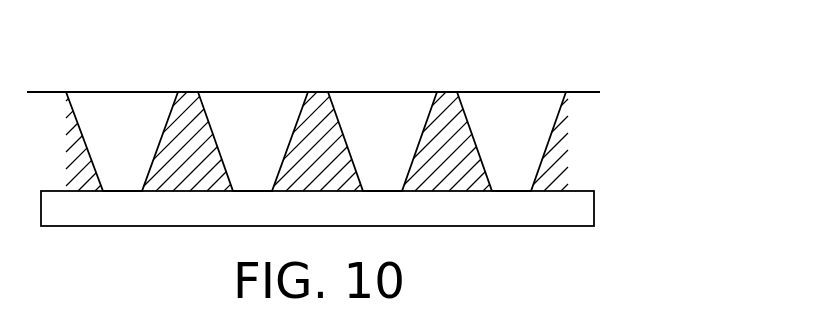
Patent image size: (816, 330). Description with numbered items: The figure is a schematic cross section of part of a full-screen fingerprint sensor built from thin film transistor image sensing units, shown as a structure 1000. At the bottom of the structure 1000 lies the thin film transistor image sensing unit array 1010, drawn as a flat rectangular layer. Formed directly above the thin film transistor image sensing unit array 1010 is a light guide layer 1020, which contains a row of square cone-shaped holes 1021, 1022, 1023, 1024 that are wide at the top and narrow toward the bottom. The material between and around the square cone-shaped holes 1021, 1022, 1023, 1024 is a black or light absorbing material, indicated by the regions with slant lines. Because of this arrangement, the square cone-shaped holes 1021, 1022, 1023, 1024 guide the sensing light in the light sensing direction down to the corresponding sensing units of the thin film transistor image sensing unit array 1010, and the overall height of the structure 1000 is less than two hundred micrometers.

The structure 1000 is at (757, 277).
The thin film transistor image sensing unit array 1010 is at (588, 209).
The light guide layer 1020 is at (600, 92).
The square cone-shaped hole 1021 is at (510, 105).
The square cone-shaped hole 1022 is at (382, 107).
The square cone-shaped hole 1023 is at (250, 105).
The square cone-shaped hole 1024 is at (120, 107).